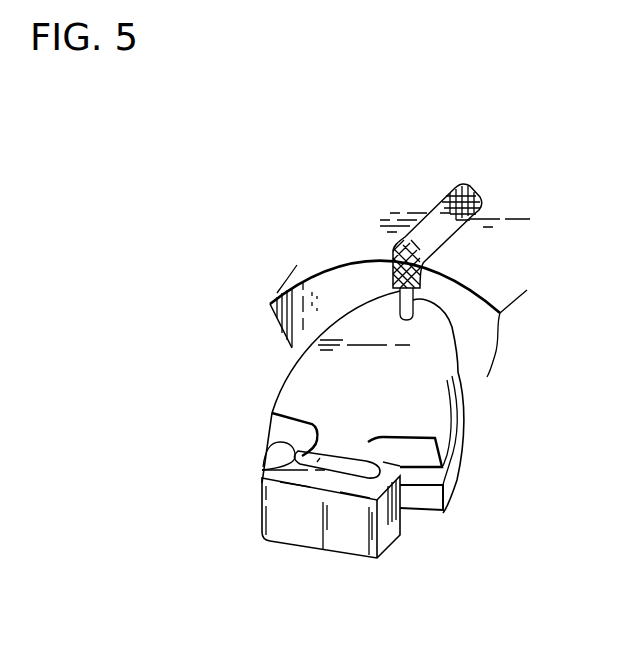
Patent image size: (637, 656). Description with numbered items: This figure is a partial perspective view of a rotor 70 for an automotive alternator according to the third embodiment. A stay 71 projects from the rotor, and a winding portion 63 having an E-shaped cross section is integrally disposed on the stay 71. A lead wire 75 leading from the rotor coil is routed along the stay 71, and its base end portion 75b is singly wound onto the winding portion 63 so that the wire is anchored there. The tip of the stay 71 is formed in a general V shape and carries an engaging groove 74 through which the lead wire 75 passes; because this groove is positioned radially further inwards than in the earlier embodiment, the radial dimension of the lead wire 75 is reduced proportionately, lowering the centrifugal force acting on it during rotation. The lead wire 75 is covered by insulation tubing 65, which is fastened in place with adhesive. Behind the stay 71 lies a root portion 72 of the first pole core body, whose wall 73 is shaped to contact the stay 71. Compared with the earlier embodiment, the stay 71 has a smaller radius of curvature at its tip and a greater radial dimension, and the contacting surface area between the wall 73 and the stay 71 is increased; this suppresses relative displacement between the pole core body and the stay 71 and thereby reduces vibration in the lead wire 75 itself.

The rotor 70 is at (297, 220).
The stay 71 is at (350, 378).
The root portion 72 is at (357, 287).
The wall 73 is at (317, 303).
The engaging groove 74 is at (500, 313).
The lead wire 75 is at (428, 316).
The base end portion 75b is at (265, 467).
The insulation tubing 65 is at (440, 228).
The winding portion 63 is at (312, 520).